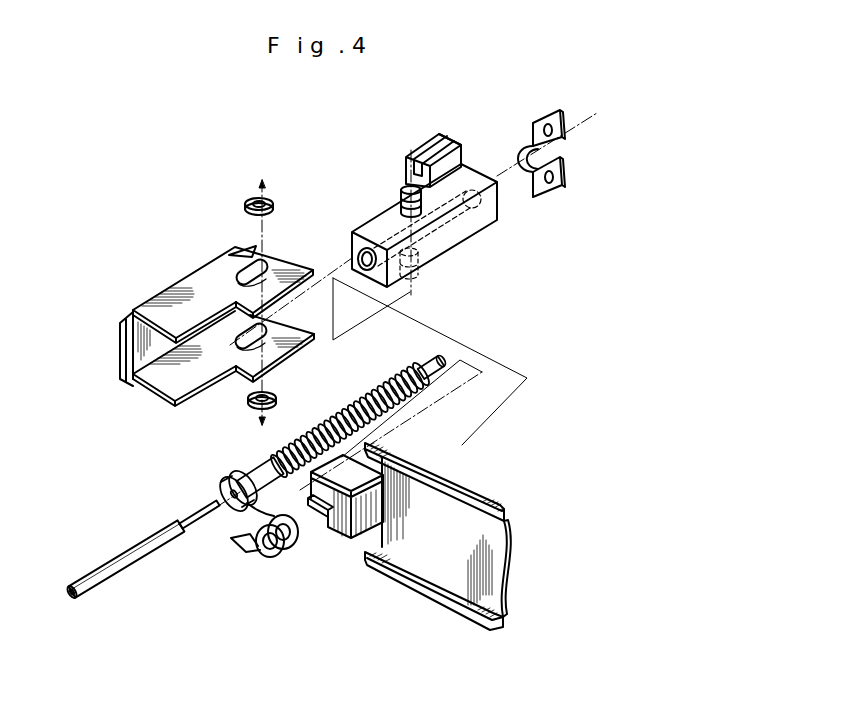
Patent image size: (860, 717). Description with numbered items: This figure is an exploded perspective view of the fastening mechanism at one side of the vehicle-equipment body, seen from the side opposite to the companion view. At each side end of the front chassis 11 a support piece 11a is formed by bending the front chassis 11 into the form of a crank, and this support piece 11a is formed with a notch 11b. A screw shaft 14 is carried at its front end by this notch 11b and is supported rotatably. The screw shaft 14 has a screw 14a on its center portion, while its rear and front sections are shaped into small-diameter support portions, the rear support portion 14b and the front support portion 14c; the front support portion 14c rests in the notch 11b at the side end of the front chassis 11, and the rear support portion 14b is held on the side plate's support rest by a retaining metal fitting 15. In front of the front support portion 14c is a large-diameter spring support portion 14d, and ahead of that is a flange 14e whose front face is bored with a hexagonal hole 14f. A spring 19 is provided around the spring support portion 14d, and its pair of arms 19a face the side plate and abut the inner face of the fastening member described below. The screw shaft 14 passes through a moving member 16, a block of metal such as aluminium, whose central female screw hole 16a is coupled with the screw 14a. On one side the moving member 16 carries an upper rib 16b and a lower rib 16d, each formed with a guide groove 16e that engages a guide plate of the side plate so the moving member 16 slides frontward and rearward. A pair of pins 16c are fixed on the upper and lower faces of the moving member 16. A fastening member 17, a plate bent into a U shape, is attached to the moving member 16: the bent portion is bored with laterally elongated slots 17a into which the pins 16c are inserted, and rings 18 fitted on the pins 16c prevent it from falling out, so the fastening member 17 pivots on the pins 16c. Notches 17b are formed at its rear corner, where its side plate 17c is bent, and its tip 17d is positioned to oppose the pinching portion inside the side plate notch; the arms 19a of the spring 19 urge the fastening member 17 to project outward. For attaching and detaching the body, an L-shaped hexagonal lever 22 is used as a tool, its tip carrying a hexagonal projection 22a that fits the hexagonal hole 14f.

The front chassis 11 is at (405, 536).
The support piece 11a is at (348, 542).
The notch 11b is at (330, 514).
The screw shaft 14 is at (298, 428).
The screw 14a is at (346, 416).
The rear support portion 14b is at (429, 374).
The front support portion 14c is at (263, 478).
The spring support portion 14d is at (233, 484).
The flange 14e is at (224, 490).
The hexagonal hole 14f is at (228, 496).
The retaining metal fitting 15 is at (542, 116).
The moving member 16 is at (406, 195).
The female screw hole 16a is at (356, 254).
The upper rib 16b is at (456, 137).
The pins 16c is at (407, 188).
The lower rib 16d is at (459, 150).
The guide groove 16e is at (448, 140).
The fastening member 17 is at (205, 303).
The slots 17a is at (268, 269).
The notches 17b is at (226, 268).
The side plate 17c is at (250, 252).
The tip 17d is at (123, 350).
The rings 18 is at (266, 197).
The spring 19 is at (257, 550).
The arms 19a is at (242, 554).
The hexagonal lever 22 is at (143, 553).
The hexagonal projection 22a is at (196, 530).